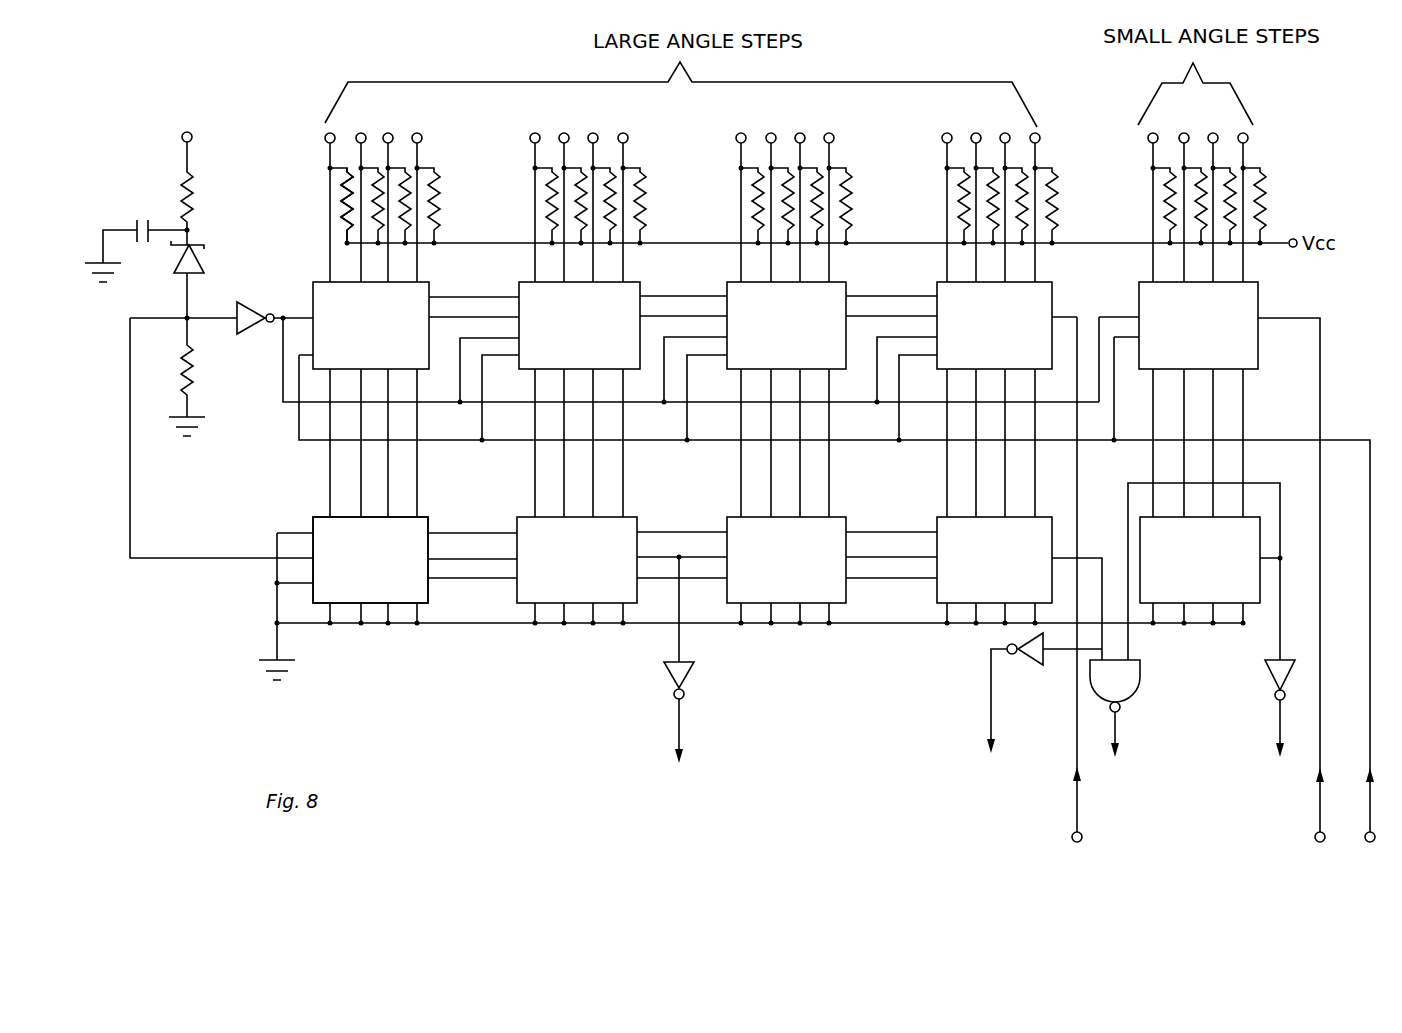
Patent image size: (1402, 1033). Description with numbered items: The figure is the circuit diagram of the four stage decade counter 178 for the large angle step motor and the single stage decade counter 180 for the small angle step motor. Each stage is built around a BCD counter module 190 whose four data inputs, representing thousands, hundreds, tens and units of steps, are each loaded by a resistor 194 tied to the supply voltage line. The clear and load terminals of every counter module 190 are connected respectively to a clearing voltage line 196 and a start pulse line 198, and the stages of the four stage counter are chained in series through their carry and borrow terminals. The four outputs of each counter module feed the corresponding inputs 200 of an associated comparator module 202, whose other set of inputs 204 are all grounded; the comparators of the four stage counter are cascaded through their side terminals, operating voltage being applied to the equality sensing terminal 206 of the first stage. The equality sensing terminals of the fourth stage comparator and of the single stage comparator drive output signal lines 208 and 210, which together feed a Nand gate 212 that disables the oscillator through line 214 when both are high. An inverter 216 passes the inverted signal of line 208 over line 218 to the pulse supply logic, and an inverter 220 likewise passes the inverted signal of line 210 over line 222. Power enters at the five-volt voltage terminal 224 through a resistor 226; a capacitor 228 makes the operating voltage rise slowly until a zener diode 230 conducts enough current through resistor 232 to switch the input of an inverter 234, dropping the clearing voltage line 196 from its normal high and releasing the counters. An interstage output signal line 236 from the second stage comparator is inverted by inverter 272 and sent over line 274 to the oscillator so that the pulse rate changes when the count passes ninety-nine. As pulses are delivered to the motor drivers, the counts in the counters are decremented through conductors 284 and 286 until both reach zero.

The four stage decade counter 178 is at (478, 683).
The single stage decade counter 180 is at (1305, 202).
The counter module 190 is at (422, 135).
The resistor 194 is at (349, 188).
The clearing voltage line 196 is at (290, 406).
The start pulse line 198 is at (1338, 438).
The inputs 200 is at (330, 478).
The comparator module 202 is at (345, 592).
The inputs 204 is at (420, 608).
The equality sensing terminal 206 is at (297, 560).
The output signal line 208 is at (1102, 567).
The output signal line 210 is at (1280, 632).
The Nand gate 212 is at (1137, 690).
The line 214 is at (1118, 733).
The inverter 216 is at (1032, 662).
The line 218 is at (988, 718).
The inverter 220 is at (1272, 687).
The line 222 is at (1277, 720).
The +5V voltage terminal 224 is at (192, 134).
The resistor 226 is at (193, 207).
The capacitor 228 is at (140, 227).
The zener diode 230 is at (204, 262).
The resistor 232 is at (193, 372).
The inverter 234 is at (266, 298).
The interstage output signal line 236 is at (706, 659).
The inverter 272 is at (690, 673).
The line 274 is at (681, 728).
The conductor 284 is at (1076, 742).
The conductor 286 is at (1318, 808).